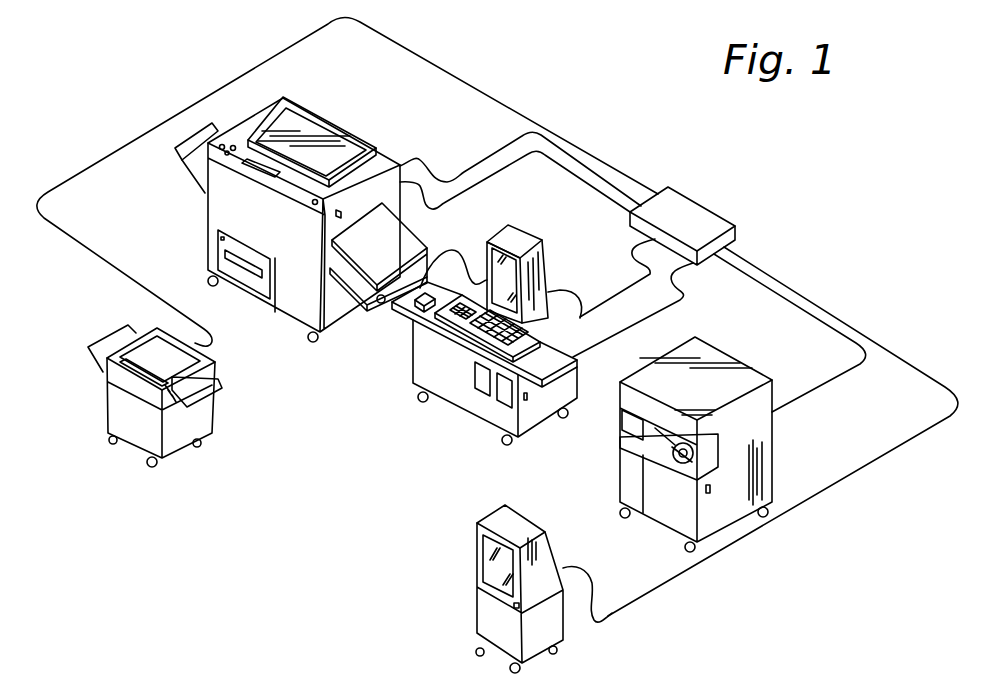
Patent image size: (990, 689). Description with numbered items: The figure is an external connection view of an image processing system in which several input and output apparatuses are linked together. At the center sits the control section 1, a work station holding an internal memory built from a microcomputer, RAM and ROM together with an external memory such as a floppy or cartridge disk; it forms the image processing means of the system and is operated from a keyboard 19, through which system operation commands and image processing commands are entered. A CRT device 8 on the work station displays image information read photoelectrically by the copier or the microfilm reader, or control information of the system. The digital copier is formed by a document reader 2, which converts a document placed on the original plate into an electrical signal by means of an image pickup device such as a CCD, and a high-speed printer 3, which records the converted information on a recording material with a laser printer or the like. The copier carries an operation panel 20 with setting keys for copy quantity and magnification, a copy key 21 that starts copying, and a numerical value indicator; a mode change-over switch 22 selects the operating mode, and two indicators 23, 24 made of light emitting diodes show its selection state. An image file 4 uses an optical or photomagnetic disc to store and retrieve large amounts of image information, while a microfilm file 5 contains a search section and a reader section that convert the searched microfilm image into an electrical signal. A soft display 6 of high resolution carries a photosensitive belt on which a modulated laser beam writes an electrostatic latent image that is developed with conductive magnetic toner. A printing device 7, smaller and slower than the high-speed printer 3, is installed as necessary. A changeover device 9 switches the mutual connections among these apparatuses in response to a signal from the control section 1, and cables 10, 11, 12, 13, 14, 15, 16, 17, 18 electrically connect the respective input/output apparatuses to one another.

The control section 1 is at (423, 352).
The document reader 2 is at (288, 110).
The high-speed printer 3 is at (213, 205).
The image file 4 is at (255, 281).
The microfilm file 5 is at (745, 370).
The soft display 6 is at (528, 528).
The printing device 7 is at (117, 415).
The CRT device 8 is at (508, 263).
The changeover device 9 is at (702, 203).
The cable 10 is at (547, 125).
The cable 11 is at (463, 167).
The cable 12 is at (497, 172).
The cable 13 is at (608, 303).
The cable 14 is at (640, 313).
The cable 15 is at (779, 297).
The cable 16 is at (790, 288).
The cable 17 is at (458, 255).
The cable 18 is at (567, 272).
The keyboard 19 is at (531, 352).
The operation panel 20 is at (272, 178).
The copy key 21 is at (314, 204).
The mode change-over switch 22 is at (214, 142).
The indicator 23 is at (234, 145).
The indicator 24 is at (186, 154).